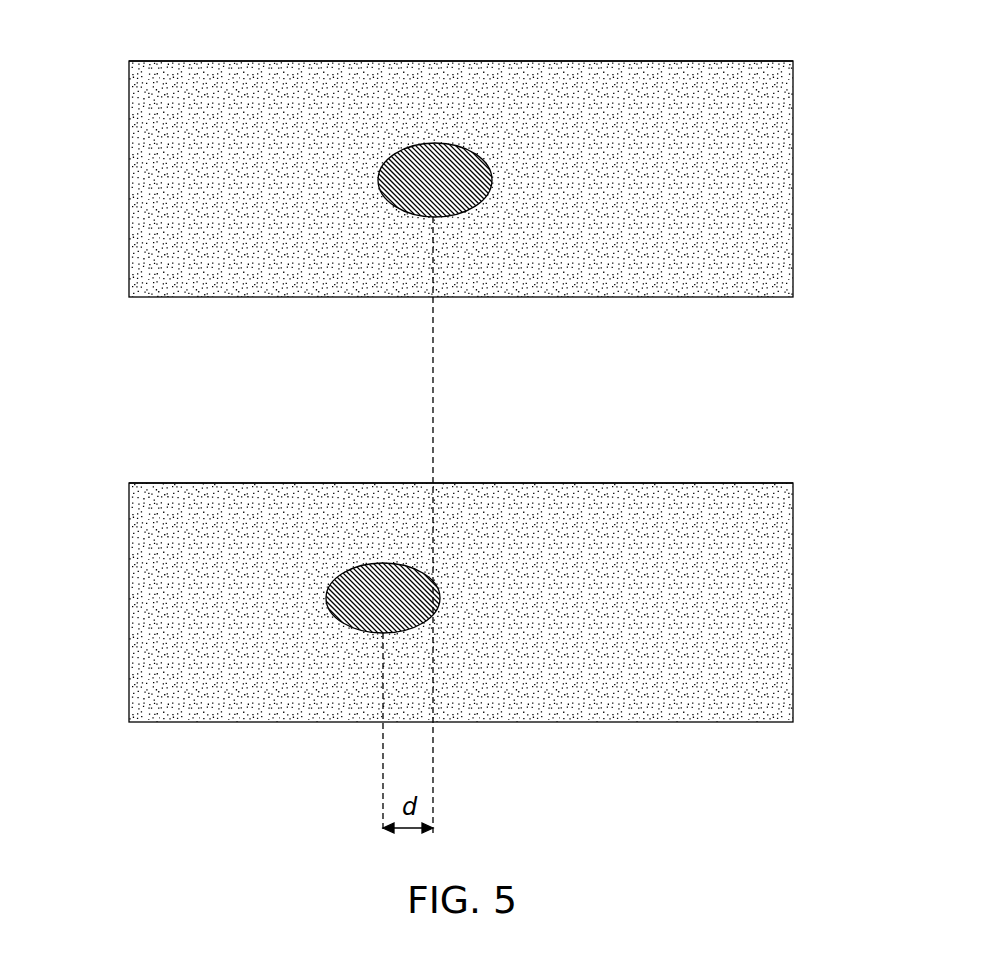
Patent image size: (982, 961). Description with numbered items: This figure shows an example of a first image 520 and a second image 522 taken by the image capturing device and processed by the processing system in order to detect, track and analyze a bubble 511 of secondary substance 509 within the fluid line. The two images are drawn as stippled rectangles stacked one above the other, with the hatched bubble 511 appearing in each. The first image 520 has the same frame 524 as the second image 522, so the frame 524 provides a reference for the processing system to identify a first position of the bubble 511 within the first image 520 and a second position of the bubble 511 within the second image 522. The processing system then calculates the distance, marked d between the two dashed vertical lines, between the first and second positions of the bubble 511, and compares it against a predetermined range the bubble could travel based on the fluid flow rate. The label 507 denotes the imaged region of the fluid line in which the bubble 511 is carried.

The substrate 507 is at (129, 165).
The secondary substance 509 is at (446, 150).
The bubble 511 is at (416, 144).
The first image 520 is at (795, 245).
The second image 522 is at (795, 606).
The frame 524 is at (793, 171).